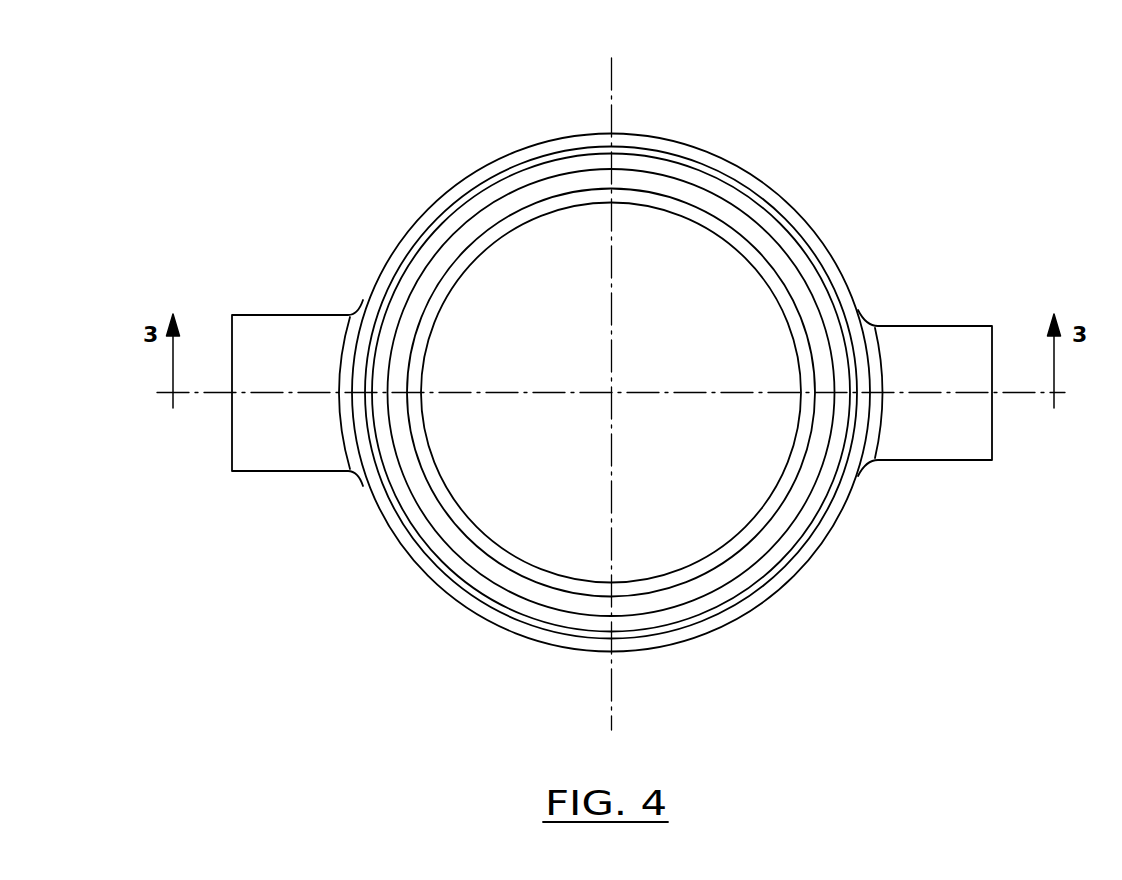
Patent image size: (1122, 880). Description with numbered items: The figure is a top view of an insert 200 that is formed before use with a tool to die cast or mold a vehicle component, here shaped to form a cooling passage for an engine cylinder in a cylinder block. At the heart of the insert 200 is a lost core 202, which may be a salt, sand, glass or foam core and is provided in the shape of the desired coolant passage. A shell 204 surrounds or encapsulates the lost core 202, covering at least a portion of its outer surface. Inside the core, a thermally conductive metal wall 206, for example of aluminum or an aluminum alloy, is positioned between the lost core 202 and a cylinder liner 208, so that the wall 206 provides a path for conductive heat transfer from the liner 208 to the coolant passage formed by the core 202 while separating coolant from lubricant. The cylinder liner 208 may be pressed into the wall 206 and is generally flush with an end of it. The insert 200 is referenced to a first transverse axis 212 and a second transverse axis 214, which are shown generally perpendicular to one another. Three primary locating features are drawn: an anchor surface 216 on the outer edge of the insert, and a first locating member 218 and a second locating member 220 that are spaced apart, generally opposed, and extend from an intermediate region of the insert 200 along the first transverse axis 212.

The insert 200 is at (650, 383).
The lost core 202 is at (490, 593).
The shell 204 is at (437, 577).
The metal wall 206 is at (547, 598).
The cylinder liner 208 is at (660, 587).
The first transverse axis 212 is at (1026, 390).
The second transverse axis 214 is at (610, 80).
The anchor surface 216 is at (393, 547).
The first locating member 218 is at (949, 442).
The second locating member 220 is at (255, 442).